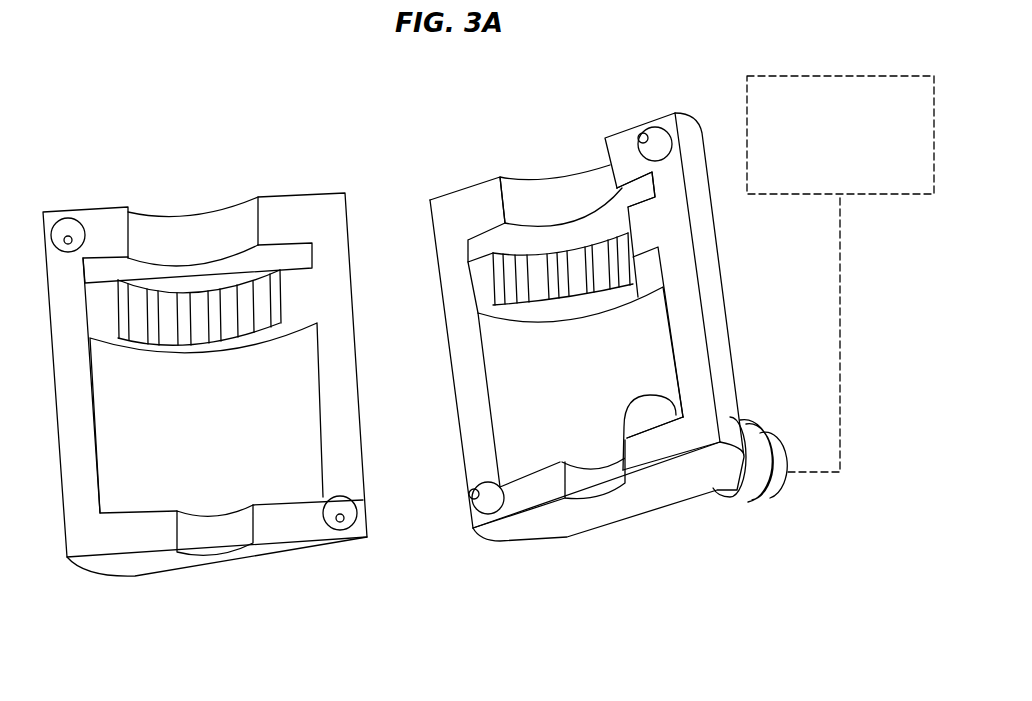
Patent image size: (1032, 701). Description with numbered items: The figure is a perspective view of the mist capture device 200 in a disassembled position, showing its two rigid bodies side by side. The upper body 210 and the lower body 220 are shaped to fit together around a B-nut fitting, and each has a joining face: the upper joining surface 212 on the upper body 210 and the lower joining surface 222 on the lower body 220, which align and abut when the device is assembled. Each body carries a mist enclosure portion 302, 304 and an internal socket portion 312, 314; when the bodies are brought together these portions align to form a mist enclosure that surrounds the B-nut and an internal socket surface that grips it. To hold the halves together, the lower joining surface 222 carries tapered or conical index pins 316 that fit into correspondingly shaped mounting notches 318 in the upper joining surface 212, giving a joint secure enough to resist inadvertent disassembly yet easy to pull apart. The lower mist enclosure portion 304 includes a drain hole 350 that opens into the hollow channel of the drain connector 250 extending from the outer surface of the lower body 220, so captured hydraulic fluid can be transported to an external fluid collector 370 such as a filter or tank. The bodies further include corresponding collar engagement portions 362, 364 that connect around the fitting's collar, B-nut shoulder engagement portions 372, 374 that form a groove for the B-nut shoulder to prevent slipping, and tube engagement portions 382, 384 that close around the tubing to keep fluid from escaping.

The mist capture device 200 is at (198, 58).
The upper body 210 is at (165, 178).
The upper joining surface 212 is at (72, 428).
The lower body 220 is at (568, 116).
The lower joining surface 222 is at (688, 320).
The drain connector 250 is at (773, 487).
The mist enclosure portion 302 is at (303, 395).
The mist enclosure portion 304 is at (517, 422).
The internal socket portion 312 is at (213, 320).
The internal socket portion 314 is at (580, 285).
The index pins 316 is at (657, 138).
The mounting notches 318 is at (72, 227).
The drain hole 350 is at (637, 423).
The collar engagement portion 362 is at (195, 230).
The collar engagement portion 364 is at (568, 195).
The external fluid collector 370 is at (840, 135).
The B-nut shoulder engagement portion 372 is at (297, 260).
The B-nut shoulder engagement portion 374 is at (480, 240).
The tube engagement portion 382 is at (217, 535).
The tube engagement portion 384 is at (603, 487).